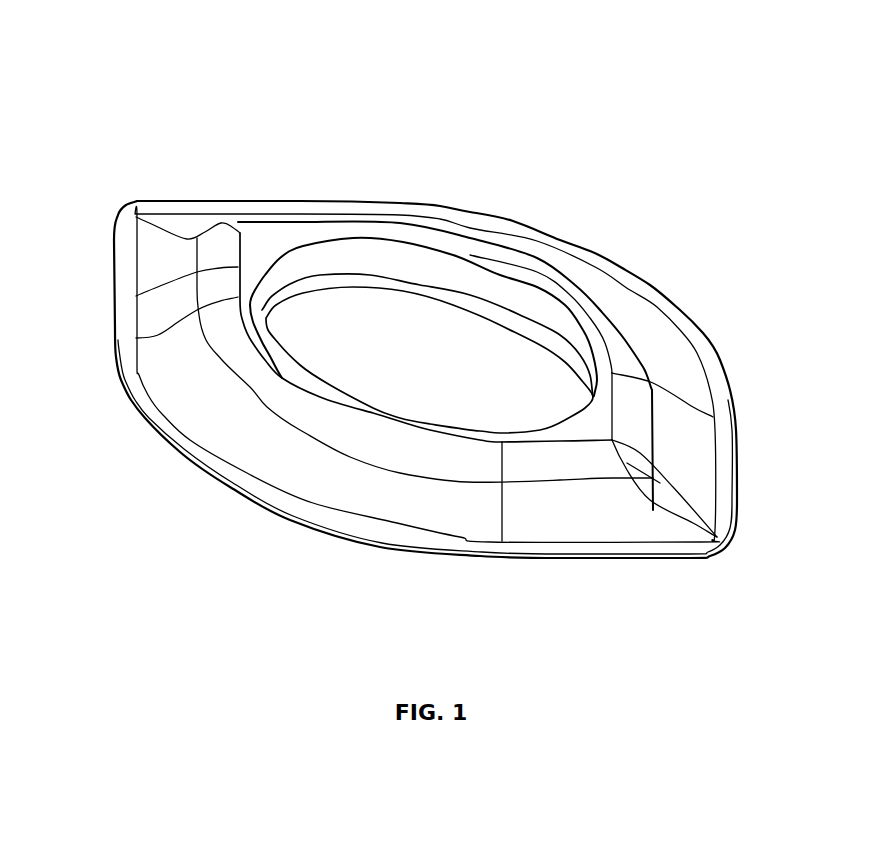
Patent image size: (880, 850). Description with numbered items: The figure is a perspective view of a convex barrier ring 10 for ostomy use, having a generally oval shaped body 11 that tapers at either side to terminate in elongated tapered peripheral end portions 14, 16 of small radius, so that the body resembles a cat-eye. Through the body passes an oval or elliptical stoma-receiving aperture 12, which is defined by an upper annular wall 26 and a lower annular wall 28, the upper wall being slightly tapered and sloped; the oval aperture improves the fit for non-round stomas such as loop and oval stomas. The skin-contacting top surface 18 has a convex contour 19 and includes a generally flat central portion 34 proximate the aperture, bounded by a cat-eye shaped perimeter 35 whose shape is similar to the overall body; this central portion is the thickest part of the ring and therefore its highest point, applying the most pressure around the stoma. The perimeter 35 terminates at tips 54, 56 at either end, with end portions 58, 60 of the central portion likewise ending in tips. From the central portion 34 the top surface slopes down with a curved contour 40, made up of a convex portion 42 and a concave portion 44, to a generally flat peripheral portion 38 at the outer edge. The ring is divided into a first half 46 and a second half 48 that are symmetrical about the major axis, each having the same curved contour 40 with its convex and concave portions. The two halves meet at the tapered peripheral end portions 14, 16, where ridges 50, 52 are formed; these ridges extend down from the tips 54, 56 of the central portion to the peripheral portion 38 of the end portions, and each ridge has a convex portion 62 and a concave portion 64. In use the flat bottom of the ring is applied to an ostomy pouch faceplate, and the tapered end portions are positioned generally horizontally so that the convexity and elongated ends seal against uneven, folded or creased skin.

The convex barrier ring 10 is at (148, 44).
The oval shaped body 11 is at (680, 310).
The stoma-receiving aperture 12 is at (495, 338).
The tapered peripheral end portion 14 is at (150, 243).
The tapered peripheral end portion 16 is at (697, 485).
The top surface 18 is at (567, 518).
The convex contour 19 is at (603, 467).
The upper annular wall 26 is at (387, 258).
The lower annular wall 28 is at (310, 280).
The central portion 34 is at (603, 417).
The cat-eye shaped perimeter 35 is at (136, 296).
The peripheral portion 38 is at (702, 343).
The curved contour 40 is at (160, 337).
The convex portion 42 is at (380, 451).
The concave portion 44 is at (420, 512).
The first half 46 is at (467, 228).
The second half 48 is at (255, 463).
The ridge 50 is at (170, 230).
The ridge 52 is at (627, 483).
The tip 54 is at (240, 230).
The tip 56 is at (612, 438).
The end portion 58 is at (260, 250).
The end portion 60 is at (577, 430).
The convex portion 62 is at (637, 467).
The concave portion 64 is at (687, 497).